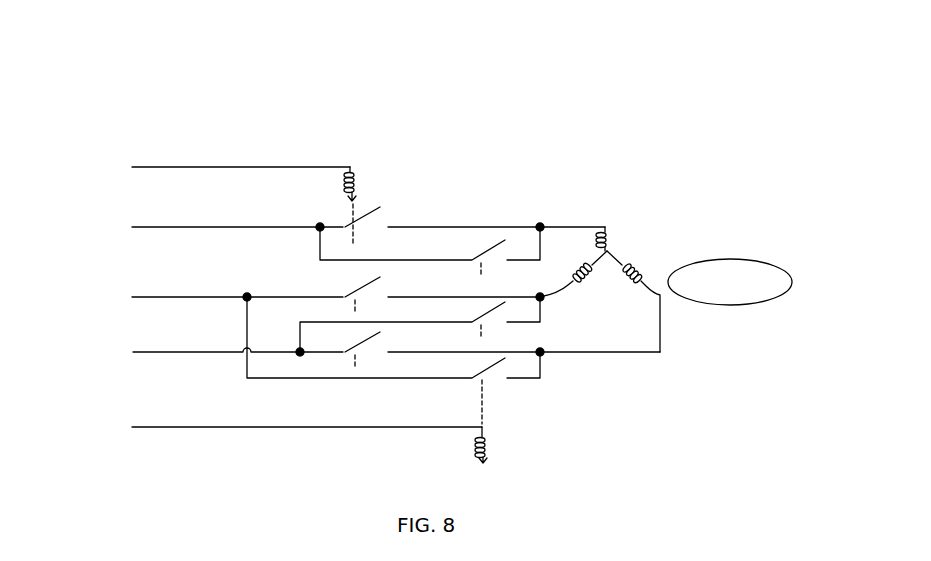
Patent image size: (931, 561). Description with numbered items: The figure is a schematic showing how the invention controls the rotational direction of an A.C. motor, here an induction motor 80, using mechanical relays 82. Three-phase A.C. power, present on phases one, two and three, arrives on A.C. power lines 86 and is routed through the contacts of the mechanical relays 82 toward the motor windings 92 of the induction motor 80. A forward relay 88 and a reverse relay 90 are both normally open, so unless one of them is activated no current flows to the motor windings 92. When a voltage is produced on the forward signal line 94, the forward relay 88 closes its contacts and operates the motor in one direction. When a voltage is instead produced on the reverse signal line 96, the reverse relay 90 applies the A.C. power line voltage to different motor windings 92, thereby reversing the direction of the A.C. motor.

The induction motor 80 is at (730, 259).
The mechanical relays 82 is at (425, 168).
The A.C. power lines 86 is at (152, 227).
The forward relay 88 is at (350, 165).
The reverse relay 90 is at (486, 443).
The motor winding 92 is at (634, 211).
The forward signal line 94 is at (148, 167).
The reverse signal line 96 is at (147, 427).